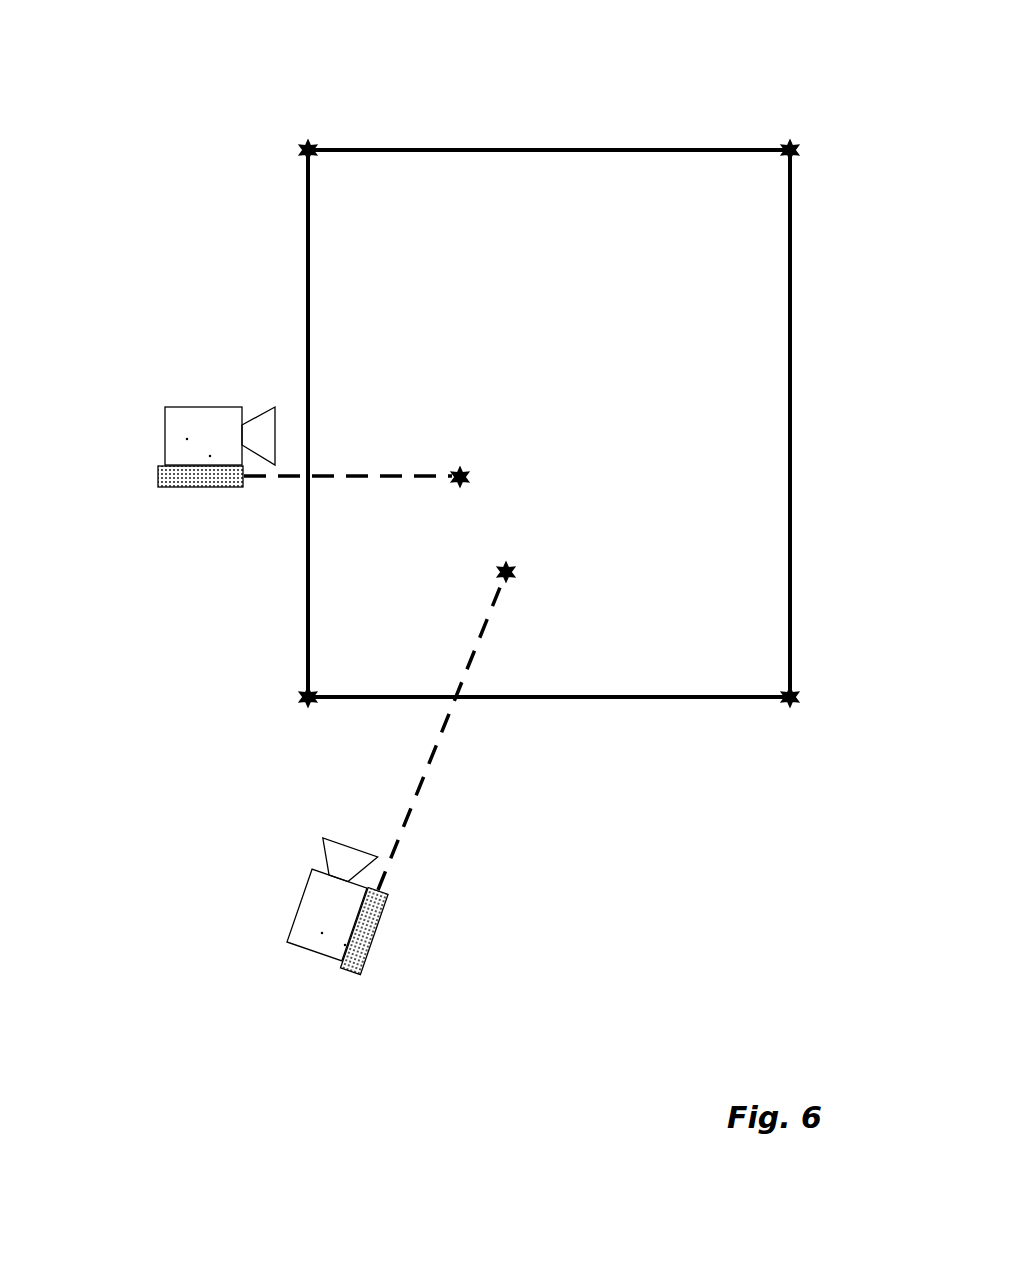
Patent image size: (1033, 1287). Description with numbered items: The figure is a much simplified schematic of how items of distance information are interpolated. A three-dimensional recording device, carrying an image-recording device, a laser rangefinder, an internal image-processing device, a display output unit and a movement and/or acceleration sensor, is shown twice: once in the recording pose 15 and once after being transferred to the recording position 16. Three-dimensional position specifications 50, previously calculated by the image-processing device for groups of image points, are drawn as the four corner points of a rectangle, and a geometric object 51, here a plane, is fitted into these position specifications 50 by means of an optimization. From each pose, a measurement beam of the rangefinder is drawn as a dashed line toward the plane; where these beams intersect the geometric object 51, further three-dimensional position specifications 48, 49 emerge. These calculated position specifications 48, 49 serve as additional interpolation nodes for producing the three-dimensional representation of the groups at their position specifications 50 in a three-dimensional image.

The recording pose 15 is at (121, 521).
The recording position 16 is at (302, 1062).
The three-dimensional position specification 48 is at (450, 483).
The three-dimensional position specification 49 is at (515, 587).
The three-dimensional position specification 50 is at (313, 141).
The geometric object 51 is at (577, 305).